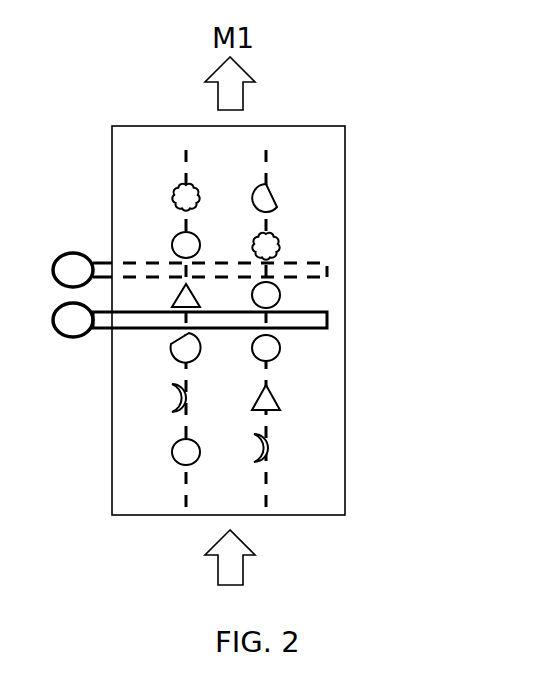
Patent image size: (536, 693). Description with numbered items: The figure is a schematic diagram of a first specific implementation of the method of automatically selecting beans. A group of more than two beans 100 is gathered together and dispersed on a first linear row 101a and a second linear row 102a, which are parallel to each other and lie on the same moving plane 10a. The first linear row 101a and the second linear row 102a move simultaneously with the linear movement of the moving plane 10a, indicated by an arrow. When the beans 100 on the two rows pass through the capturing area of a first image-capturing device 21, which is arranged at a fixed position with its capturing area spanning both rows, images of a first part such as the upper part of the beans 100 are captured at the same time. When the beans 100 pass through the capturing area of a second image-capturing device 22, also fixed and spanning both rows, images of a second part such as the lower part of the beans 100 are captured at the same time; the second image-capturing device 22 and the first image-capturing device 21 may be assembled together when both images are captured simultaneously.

The moving plane 10a is at (305, 126).
The beans 100 is at (283, 196).
The second image-capturing device 22 is at (327, 270).
The first image-capturing device 21 is at (327, 320).
The first linear row 101a is at (186, 512).
The second linear row 102a is at (266, 512).